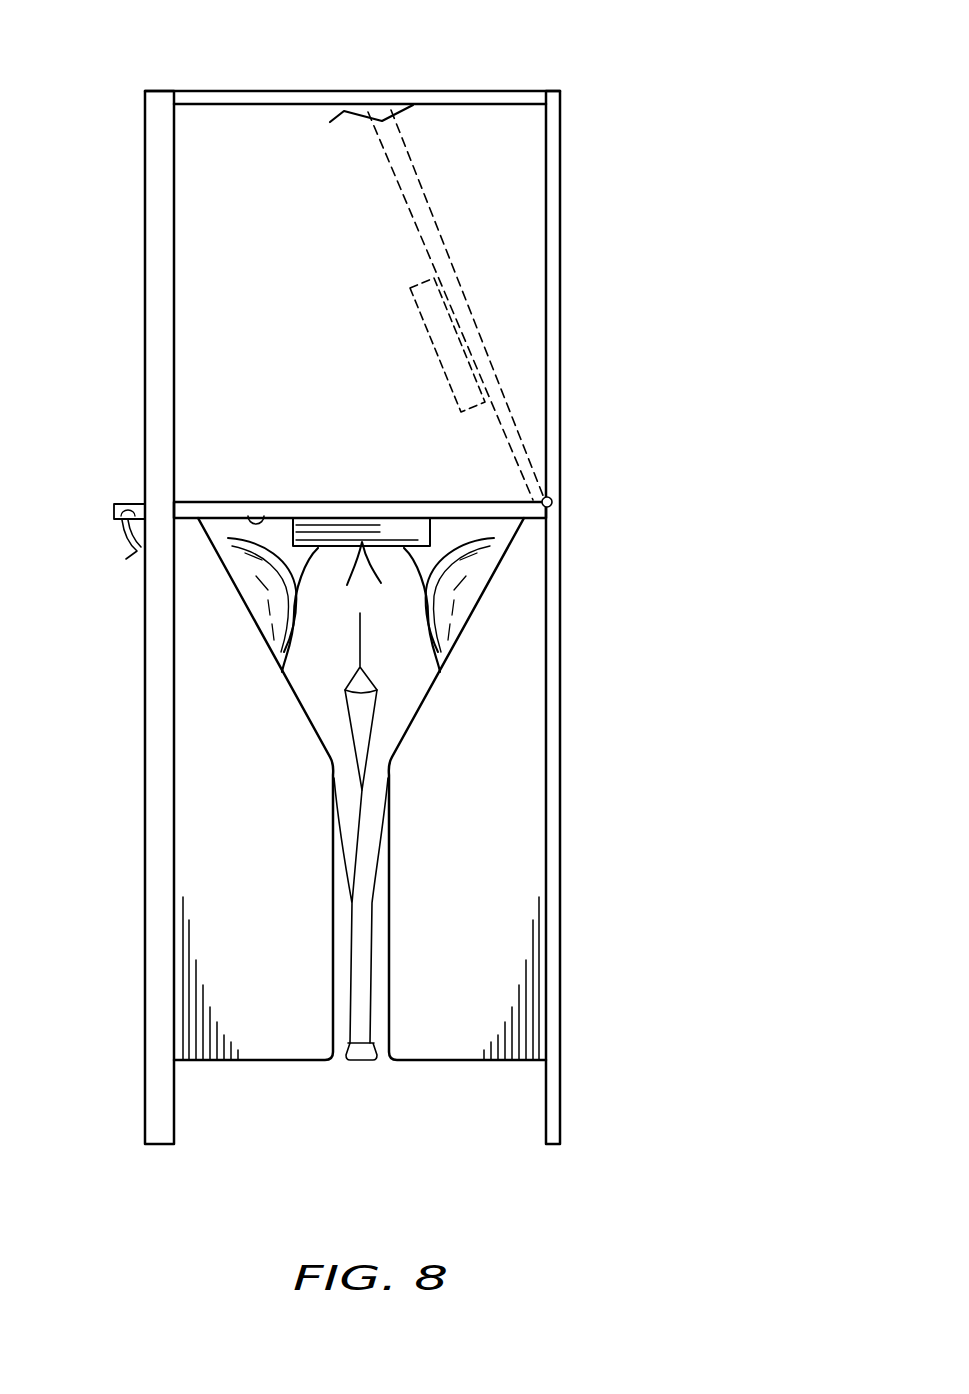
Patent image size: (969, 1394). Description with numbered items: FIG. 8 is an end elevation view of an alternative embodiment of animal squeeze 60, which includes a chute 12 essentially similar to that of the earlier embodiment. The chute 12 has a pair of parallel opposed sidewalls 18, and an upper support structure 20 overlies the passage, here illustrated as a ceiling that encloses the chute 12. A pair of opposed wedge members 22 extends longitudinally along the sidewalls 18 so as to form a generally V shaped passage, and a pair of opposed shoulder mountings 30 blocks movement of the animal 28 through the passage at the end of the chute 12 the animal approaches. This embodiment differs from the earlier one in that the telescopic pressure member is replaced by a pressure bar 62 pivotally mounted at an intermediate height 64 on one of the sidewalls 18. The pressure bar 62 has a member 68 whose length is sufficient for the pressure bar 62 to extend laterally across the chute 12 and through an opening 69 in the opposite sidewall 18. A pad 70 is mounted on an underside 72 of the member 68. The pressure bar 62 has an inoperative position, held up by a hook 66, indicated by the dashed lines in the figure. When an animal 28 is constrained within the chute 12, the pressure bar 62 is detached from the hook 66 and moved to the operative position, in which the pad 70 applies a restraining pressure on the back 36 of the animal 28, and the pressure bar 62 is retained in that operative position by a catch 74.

The chute 12 is at (517, 90).
The sidewalls 18 is at (560, 232).
The upper support structure 20 is at (268, 97).
The wedge members 22 is at (232, 792).
The animal 28 is at (413, 655).
The shoulder mountings 30 is at (253, 577).
The back 36 is at (338, 548).
The animal squeeze 60 is at (662, 317).
The pressure bar 62 is at (385, 163).
The intermediate height 64 is at (556, 499).
The hook 66 is at (403, 113).
The member 68 is at (417, 232).
The opening 69 is at (116, 503).
The pad 70 is at (418, 316).
The underside 72 is at (264, 516).
The catch 74 is at (120, 518).